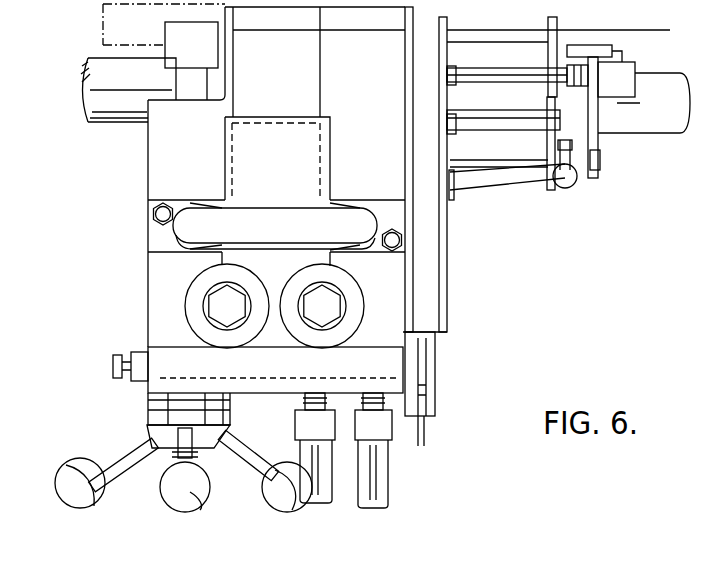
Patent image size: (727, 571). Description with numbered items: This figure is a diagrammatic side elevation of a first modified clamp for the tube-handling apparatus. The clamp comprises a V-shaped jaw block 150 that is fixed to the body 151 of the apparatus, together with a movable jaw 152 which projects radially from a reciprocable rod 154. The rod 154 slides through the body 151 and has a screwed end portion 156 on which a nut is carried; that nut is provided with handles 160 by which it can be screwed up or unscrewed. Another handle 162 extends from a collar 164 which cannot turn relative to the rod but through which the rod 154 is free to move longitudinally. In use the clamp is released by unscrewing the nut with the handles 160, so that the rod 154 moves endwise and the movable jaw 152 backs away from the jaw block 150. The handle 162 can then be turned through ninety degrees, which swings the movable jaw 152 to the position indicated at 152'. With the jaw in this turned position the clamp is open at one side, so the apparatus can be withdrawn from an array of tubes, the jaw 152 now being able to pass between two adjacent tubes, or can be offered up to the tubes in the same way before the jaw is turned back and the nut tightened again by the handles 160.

The V-shaped jaw block 150 is at (168, 177).
The body 151 is at (167, 295).
The movable jaw 152 is at (113, 72).
The turned position of the movable jaw 152' is at (121, 24).
The reciprocable rod 154 is at (186, 90).
The screwed end portion 156 is at (174, 457).
The handles 160 is at (97, 498).
The handle 162 is at (178, 403).
The collar 164 is at (146, 407).